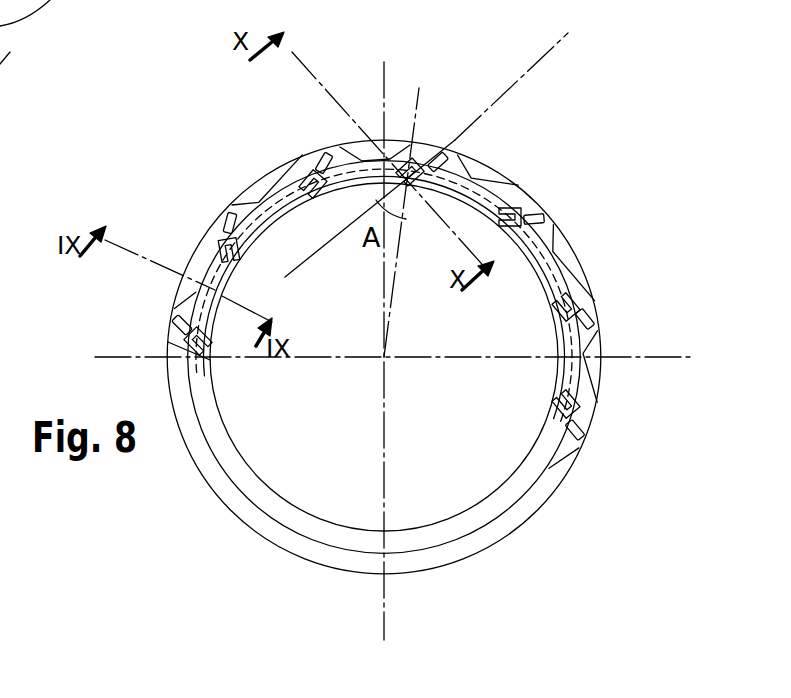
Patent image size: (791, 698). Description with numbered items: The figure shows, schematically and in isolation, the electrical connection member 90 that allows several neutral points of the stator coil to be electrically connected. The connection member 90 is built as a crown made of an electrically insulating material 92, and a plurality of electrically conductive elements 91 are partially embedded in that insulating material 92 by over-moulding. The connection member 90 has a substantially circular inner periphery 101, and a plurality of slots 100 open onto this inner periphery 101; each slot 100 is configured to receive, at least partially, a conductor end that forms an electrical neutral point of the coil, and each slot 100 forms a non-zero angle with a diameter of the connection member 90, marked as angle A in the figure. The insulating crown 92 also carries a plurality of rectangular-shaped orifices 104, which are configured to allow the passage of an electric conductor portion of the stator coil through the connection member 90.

The electrical connection member 90 is at (385, 357).
The electrically conductive elements 91 is at (187, 248).
The electrically insulating material 92 is at (230, 500).
The slots 100 is at (557, 394).
The inner periphery 101 is at (463, 508).
The rectangular-shaped orifices 104 is at (538, 210).